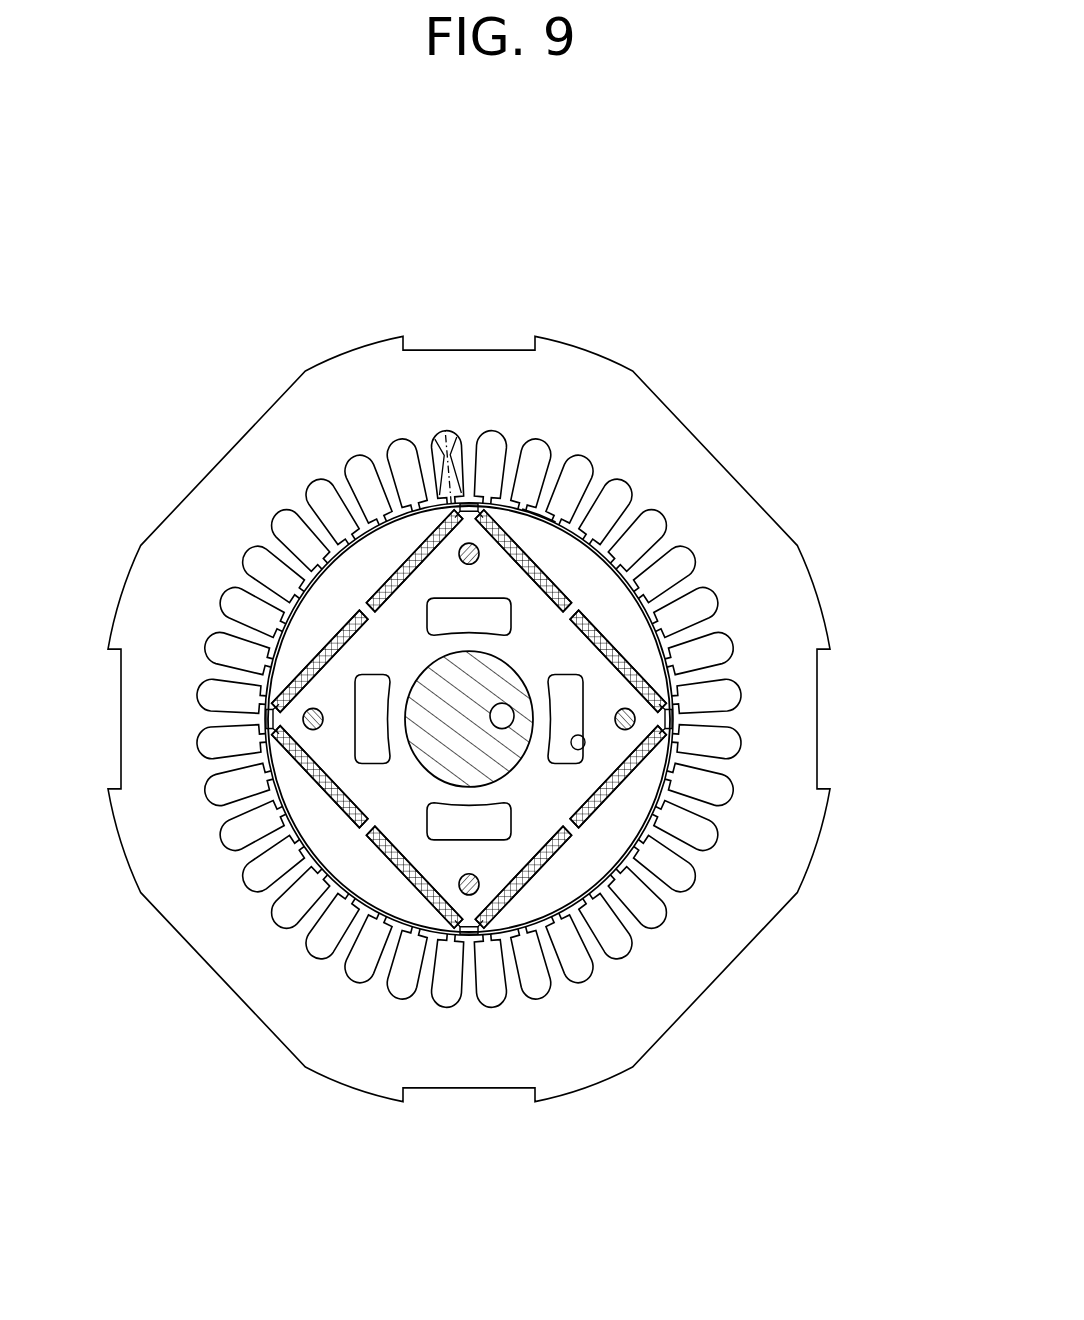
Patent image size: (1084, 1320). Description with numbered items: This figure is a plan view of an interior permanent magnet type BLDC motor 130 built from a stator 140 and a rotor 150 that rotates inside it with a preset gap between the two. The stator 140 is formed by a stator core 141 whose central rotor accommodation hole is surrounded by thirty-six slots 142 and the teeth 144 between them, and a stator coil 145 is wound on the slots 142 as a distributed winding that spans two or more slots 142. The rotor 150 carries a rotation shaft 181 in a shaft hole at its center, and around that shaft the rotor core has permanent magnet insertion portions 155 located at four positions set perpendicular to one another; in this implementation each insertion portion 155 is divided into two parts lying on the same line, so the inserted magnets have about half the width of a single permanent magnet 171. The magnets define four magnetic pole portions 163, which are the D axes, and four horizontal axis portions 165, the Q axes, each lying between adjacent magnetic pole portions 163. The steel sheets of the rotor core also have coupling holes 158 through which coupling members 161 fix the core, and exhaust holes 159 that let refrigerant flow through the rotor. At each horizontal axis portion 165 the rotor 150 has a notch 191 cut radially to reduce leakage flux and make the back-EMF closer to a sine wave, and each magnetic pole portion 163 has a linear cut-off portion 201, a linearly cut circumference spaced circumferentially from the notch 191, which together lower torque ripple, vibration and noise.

The interior permanent magnet type BLDC motor 130 is at (764, 312).
The stator 140 is at (341, 390).
The stator core 141 is at (500, 250).
The slots 142 is at (492, 437).
The teeth 144 is at (548, 520).
The stator coil 145 is at (447, 432).
The rotor 150 is at (352, 602).
The permanent magnet insertion portions 155 is at (567, 850).
The coupling holes 158 is at (530, 538).
The exhaust holes 159 is at (677, 748).
The coupling members 161 is at (481, 553).
The magnetic pole portions 163 is at (623, 617).
The horizontal axis portions 165 is at (583, 730).
The permanent magnet 171 is at (395, 870).
The rotation shaft 181 is at (445, 735).
The notches 191 is at (467, 940).
The linear cut-off portion 201 is at (547, 985).